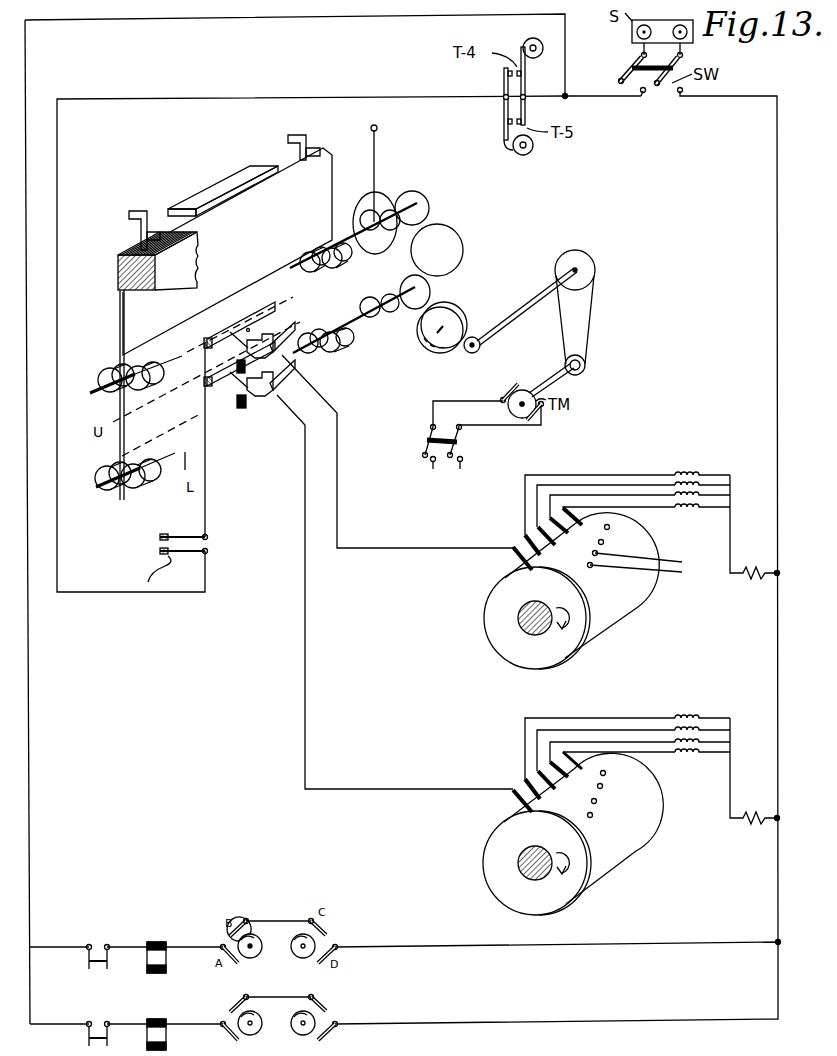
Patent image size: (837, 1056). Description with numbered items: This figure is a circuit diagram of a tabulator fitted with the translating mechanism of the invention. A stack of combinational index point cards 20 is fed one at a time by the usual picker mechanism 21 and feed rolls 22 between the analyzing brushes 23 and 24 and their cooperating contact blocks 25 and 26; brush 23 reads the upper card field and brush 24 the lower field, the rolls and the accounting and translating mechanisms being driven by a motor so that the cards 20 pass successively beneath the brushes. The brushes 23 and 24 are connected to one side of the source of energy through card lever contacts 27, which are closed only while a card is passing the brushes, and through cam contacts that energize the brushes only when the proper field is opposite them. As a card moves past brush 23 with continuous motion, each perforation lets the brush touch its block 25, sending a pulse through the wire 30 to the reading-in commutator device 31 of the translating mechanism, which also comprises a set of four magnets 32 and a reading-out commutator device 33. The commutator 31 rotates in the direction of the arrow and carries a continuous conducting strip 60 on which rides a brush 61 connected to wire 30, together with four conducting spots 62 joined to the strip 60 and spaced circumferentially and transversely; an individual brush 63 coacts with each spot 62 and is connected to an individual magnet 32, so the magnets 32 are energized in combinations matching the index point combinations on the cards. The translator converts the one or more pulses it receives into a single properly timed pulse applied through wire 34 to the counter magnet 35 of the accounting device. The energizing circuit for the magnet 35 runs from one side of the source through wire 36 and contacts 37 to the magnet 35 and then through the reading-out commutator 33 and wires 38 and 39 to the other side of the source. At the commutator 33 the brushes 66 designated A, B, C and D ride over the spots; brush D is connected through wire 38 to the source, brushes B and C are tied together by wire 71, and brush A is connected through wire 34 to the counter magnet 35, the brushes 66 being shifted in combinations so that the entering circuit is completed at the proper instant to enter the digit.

The stack of combinational index point cards 20 is at (122, 253).
The picker mechanism 21 is at (376, 162).
The feed rolls 22 is at (112, 396).
The analyzing brush 23 is at (287, 306).
The analyzing brush 24 is at (243, 389).
The contact block 25 is at (280, 330).
The contact block 26 is at (263, 394).
The card lever contacts 27 is at (158, 540).
The wire 30 is at (338, 443).
The reading-in commutator device 31 is at (513, 658).
The magnets 32 is at (690, 474).
The reading-out commutator device 33 is at (262, 950).
The wire 34 is at (202, 950).
The counter magnet 35 is at (160, 953).
The wire 36 is at (222, 20).
The contacts 37 is at (97, 945).
The wire 38 is at (428, 947).
The wire 39 is at (777, 296).
The continuous conducting strip 60 is at (592, 635).
The brush 61 is at (512, 552).
The conducting spots 62 is at (650, 567).
The brushes 63 is at (563, 510).
The brushes 66 is at (238, 916).
The wire 71 is at (292, 919).